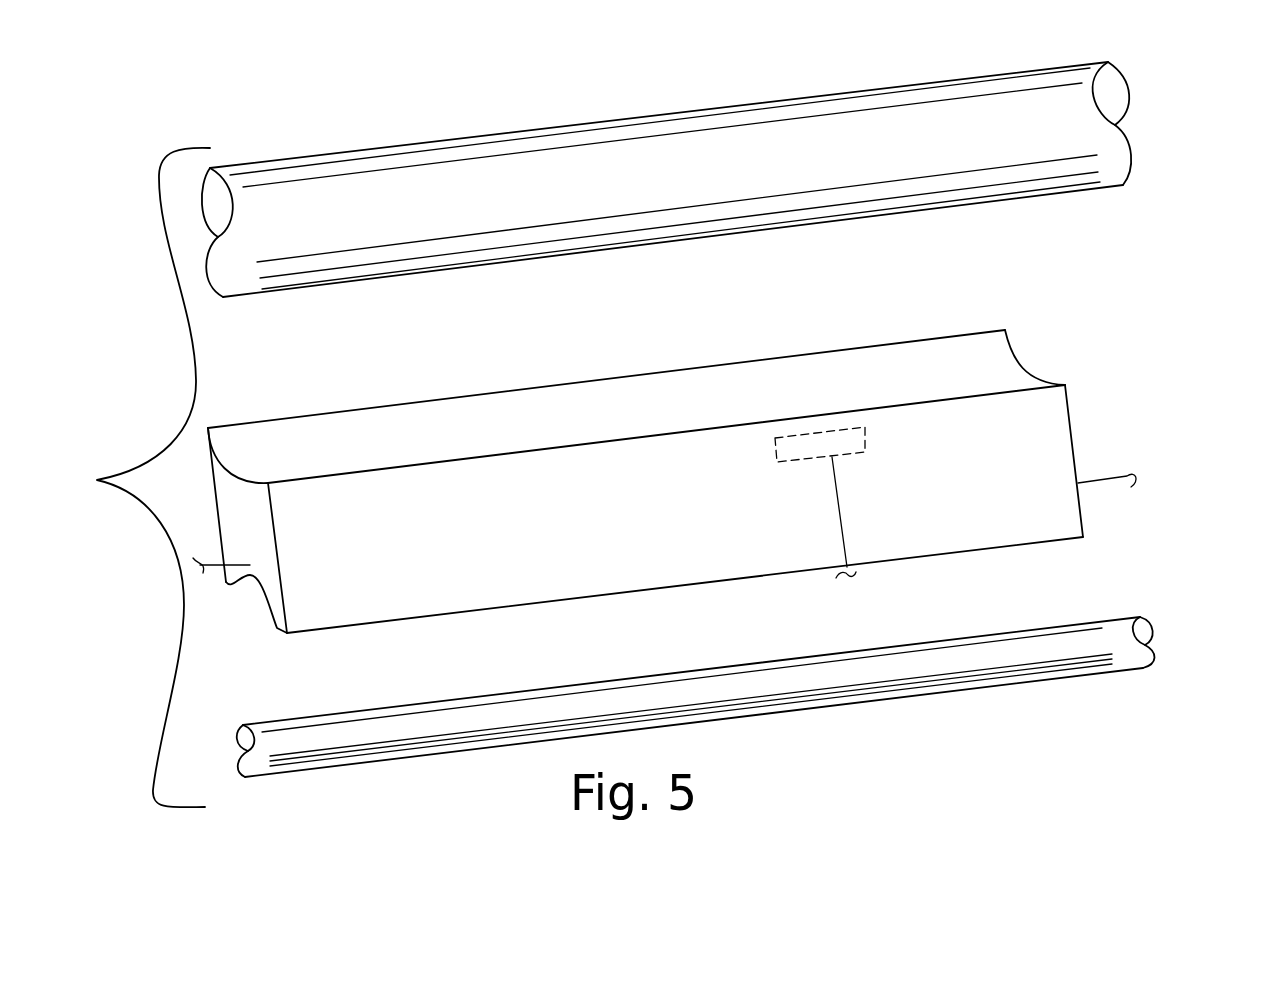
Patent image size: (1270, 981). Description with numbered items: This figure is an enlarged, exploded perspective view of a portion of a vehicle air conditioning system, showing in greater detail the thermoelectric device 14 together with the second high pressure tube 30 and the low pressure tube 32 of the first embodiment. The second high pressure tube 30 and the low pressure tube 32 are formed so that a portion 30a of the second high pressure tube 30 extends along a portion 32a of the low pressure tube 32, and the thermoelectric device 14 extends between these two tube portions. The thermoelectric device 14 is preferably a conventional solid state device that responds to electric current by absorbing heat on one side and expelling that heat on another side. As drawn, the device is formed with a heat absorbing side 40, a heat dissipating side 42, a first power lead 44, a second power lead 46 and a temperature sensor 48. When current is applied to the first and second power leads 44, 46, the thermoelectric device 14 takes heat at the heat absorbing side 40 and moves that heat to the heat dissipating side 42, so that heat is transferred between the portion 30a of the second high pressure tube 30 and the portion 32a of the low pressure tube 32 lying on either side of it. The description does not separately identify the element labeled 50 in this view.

The thermoelectric device 14 is at (665, 483).
The second high pressure tube 30 is at (739, 675).
The portion of the second high pressure tube 30a is at (742, 691).
The low pressure tube 32 is at (705, 150).
The portion of the low pressure tube 32a is at (657, 162).
The heat absorbing side 40 is at (685, 587).
The heat dissipating side 42 is at (658, 393).
The first power lead 44 is at (224, 572).
The second power lead 46 is at (1110, 490).
The temperature sensor 48 is at (852, 443).
The lead 50 is at (842, 523).